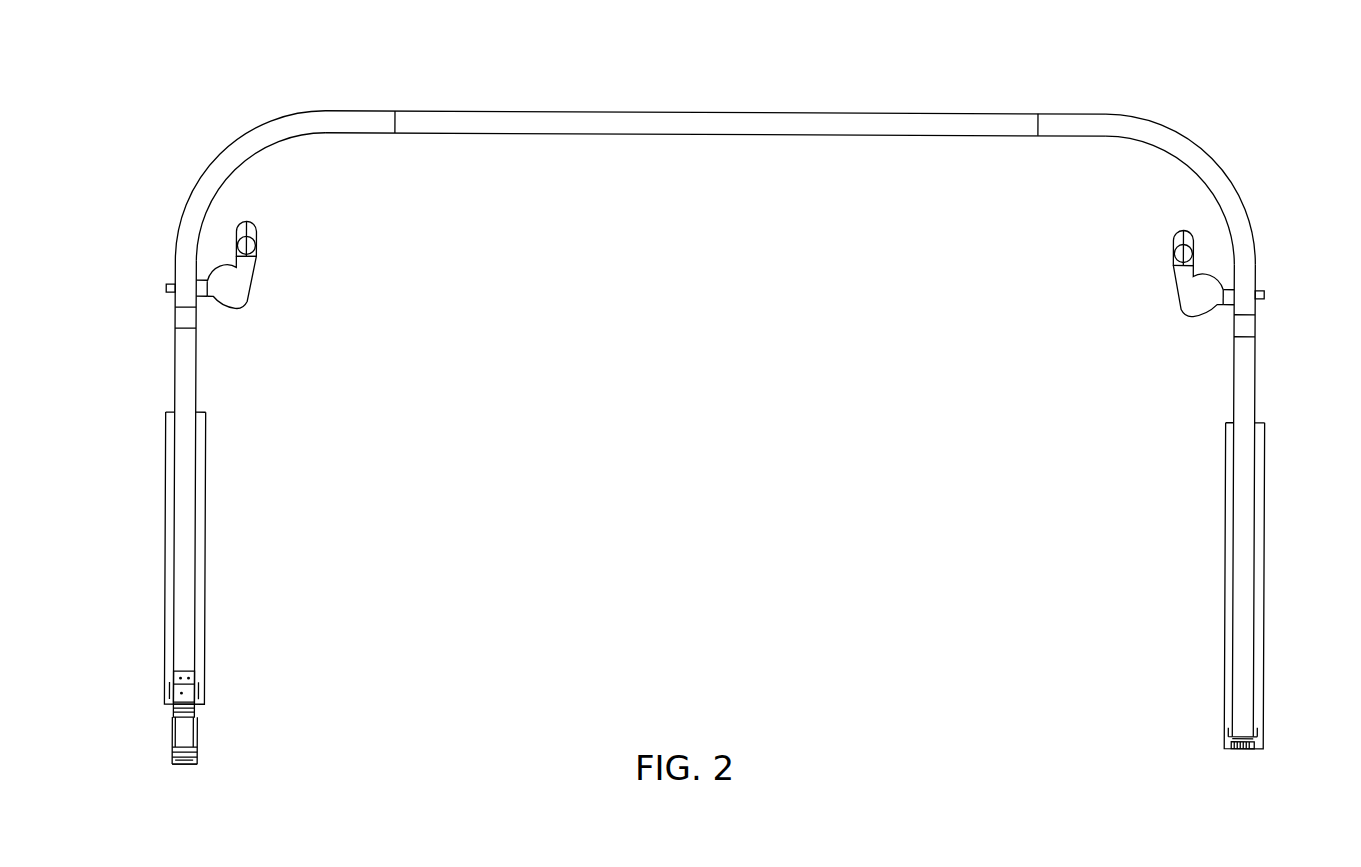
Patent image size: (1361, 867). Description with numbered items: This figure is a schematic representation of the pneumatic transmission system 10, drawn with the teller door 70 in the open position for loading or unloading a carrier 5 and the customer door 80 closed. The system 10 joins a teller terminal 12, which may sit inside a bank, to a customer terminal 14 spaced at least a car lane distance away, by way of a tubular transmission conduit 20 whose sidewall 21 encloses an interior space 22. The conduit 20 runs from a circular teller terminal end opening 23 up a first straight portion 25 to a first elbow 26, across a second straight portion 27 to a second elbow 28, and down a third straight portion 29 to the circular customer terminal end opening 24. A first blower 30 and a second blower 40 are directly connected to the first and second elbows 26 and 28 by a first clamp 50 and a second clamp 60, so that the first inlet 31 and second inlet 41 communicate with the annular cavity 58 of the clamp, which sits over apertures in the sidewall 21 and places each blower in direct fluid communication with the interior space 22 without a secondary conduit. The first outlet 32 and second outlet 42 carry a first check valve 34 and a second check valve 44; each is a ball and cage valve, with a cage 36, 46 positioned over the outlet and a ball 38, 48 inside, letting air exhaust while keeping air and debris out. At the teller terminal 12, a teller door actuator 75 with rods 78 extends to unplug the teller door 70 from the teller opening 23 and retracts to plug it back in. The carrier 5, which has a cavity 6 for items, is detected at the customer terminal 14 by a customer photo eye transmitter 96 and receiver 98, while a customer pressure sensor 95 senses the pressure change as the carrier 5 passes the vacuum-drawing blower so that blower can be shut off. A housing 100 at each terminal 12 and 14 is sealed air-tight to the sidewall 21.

The pneumatic transmission system 10 is at (709, 427).
The teller terminal 12 is at (181, 540).
The customer terminal 14 is at (1233, 540).
The transmission conduit 20 is at (488, 110).
The sidewall 21 is at (667, 374).
The interior space 22 is at (668, 337).
The teller terminal end opening 23 is at (202, 694).
The customer terminal end opening 24 is at (1252, 748).
The first straight portion 25 is at (172, 500).
The first elbow 26 is at (178, 236).
The second straight portion 27 is at (565, 110).
The second elbow 28 is at (1200, 152).
The third straight portion 29 is at (1257, 372).
The first blower 30 is at (258, 290).
The first inlet 31 is at (237, 309).
The first outlet 32 is at (258, 256).
The first check valve 34 is at (223, 243).
The cage 36 is at (243, 222).
The ball 38 is at (258, 236).
The second blower 40 is at (1178, 292).
The second inlet 41 is at (1198, 312).
The second outlet 42 is at (1174, 258).
The second check valve 44 is at (1193, 253).
The cage 46 is at (1185, 227).
The ball 48 is at (1174, 243).
The first clamp 50 is at (197, 281).
The annular cavity 58 is at (167, 290).
The second clamp 60 is at (1235, 286).
The teller door 70 is at (185, 765).
The teller door actuator 75 is at (130, 701).
The rods 78 is at (180, 764).
The customer door 80 is at (1240, 748).
The customer pressure sensor 95 is at (1214, 696).
The customer photo eye transmitter 96 is at (1171, 750).
The customer photo eye receiver 98 is at (1304, 751).
The housing 100 is at (207, 512).
The carrier 5 is at (175, 736).
The cavity 6 is at (190, 738).